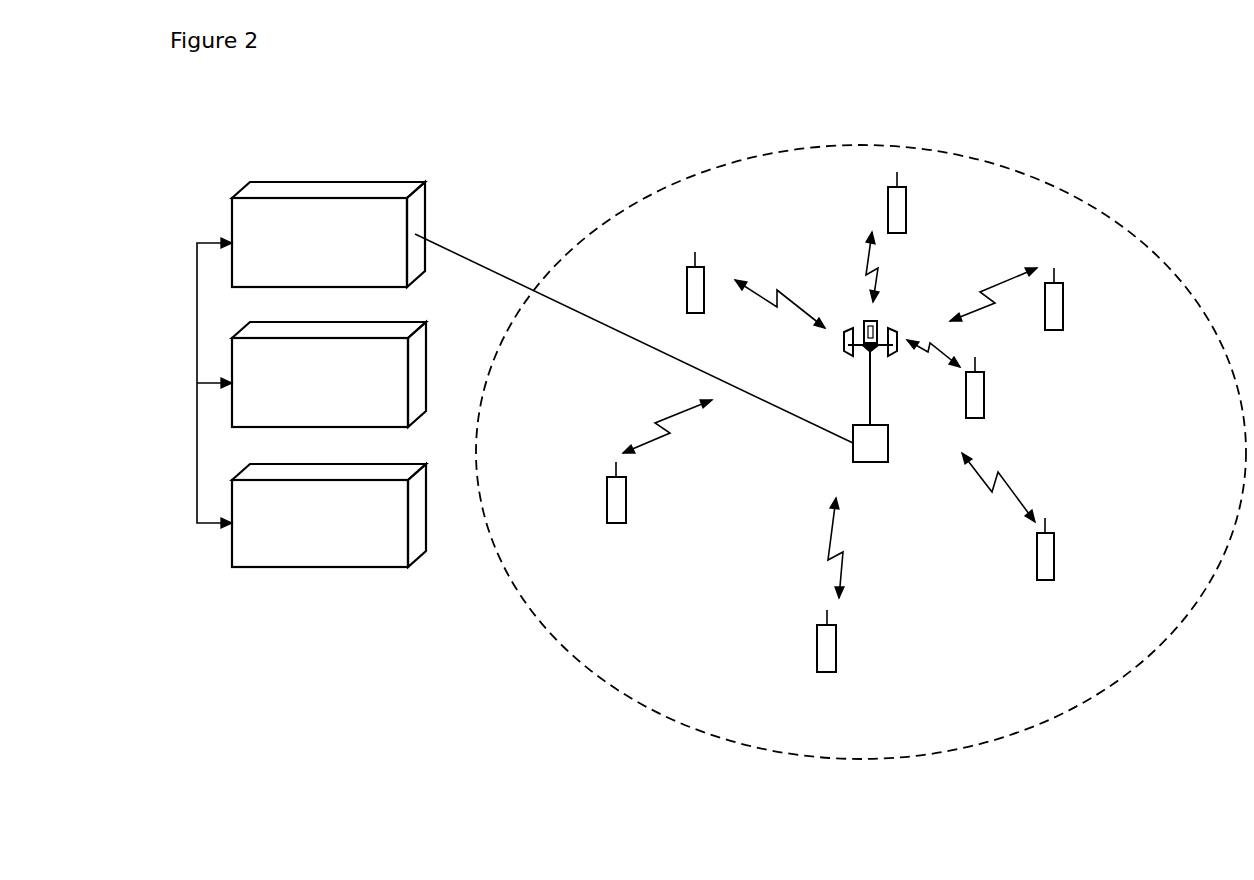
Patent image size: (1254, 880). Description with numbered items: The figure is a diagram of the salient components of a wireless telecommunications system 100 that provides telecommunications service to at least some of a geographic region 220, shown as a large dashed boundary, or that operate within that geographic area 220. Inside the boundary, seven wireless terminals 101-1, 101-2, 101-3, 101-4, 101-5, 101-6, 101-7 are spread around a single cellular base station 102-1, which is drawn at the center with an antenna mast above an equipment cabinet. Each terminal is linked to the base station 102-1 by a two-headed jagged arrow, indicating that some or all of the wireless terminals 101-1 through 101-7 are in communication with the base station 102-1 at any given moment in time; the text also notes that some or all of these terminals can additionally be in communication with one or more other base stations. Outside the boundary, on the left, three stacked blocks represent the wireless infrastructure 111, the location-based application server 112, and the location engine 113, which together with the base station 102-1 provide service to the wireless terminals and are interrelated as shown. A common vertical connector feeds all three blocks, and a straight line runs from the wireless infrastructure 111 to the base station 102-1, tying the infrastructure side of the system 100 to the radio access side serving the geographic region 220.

The wireless telecommunications system 100 is at (319, 103).
The wireless infrastructure 111 is at (328, 234).
The location-based application server 112 is at (329, 374).
The location engine 113 is at (329, 515).
The geographic region 220 is at (861, 436).
The cellular base station 102-1 is at (838, 391).
The wireless terminal 101-1 is at (982, 379).
The wireless terminal 101-2 is at (756, 290).
The wireless terminal 101-3 is at (922, 237).
The wireless terminal 101-4 is at (1042, 299).
The wireless terminal 101-5 is at (659, 461).
The wireless terminal 101-6 is at (863, 585).
The wireless terminal 101-7 is at (1045, 516).